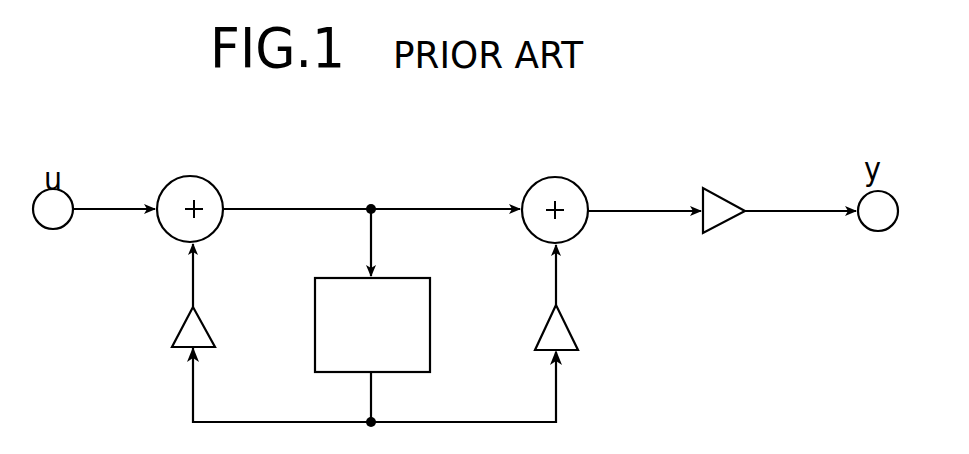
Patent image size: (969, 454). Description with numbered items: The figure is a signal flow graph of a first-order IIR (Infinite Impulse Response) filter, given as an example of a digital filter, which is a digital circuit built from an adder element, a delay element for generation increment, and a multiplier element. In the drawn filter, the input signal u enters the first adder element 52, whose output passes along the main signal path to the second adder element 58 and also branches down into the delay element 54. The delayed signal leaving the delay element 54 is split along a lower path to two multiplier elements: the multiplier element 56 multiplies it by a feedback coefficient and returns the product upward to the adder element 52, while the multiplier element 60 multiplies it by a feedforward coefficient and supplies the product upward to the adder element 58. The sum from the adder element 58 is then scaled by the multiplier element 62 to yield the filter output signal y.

The adder element 52 is at (202, 175).
The delay element 54 is at (413, 272).
The multiplier element 56 is at (200, 320).
The adder element 58 is at (562, 176).
The multiplier element 60 is at (565, 330).
The multiplier element 62 is at (724, 196).